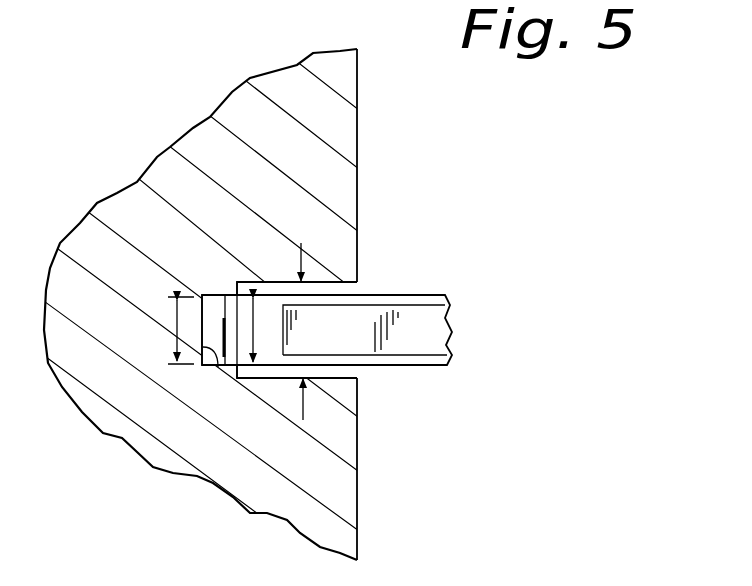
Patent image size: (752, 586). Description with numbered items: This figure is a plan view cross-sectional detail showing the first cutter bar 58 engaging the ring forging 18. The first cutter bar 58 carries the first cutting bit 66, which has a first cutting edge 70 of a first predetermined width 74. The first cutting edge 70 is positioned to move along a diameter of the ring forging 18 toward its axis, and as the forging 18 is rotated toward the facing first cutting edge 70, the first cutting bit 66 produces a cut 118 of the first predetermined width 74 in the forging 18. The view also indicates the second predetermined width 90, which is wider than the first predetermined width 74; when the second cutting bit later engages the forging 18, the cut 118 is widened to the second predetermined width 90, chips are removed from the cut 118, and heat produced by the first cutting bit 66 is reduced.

The ring forging 18 is at (343, 142).
The first cutter bar 58 is at (432, 328).
The first cutting bit 66 is at (420, 297).
The first cutting edge 70 is at (218, 367).
The first predetermined width 74 is at (177, 320).
The second predetermined width 90 is at (303, 402).
The cut 118 is at (209, 297).